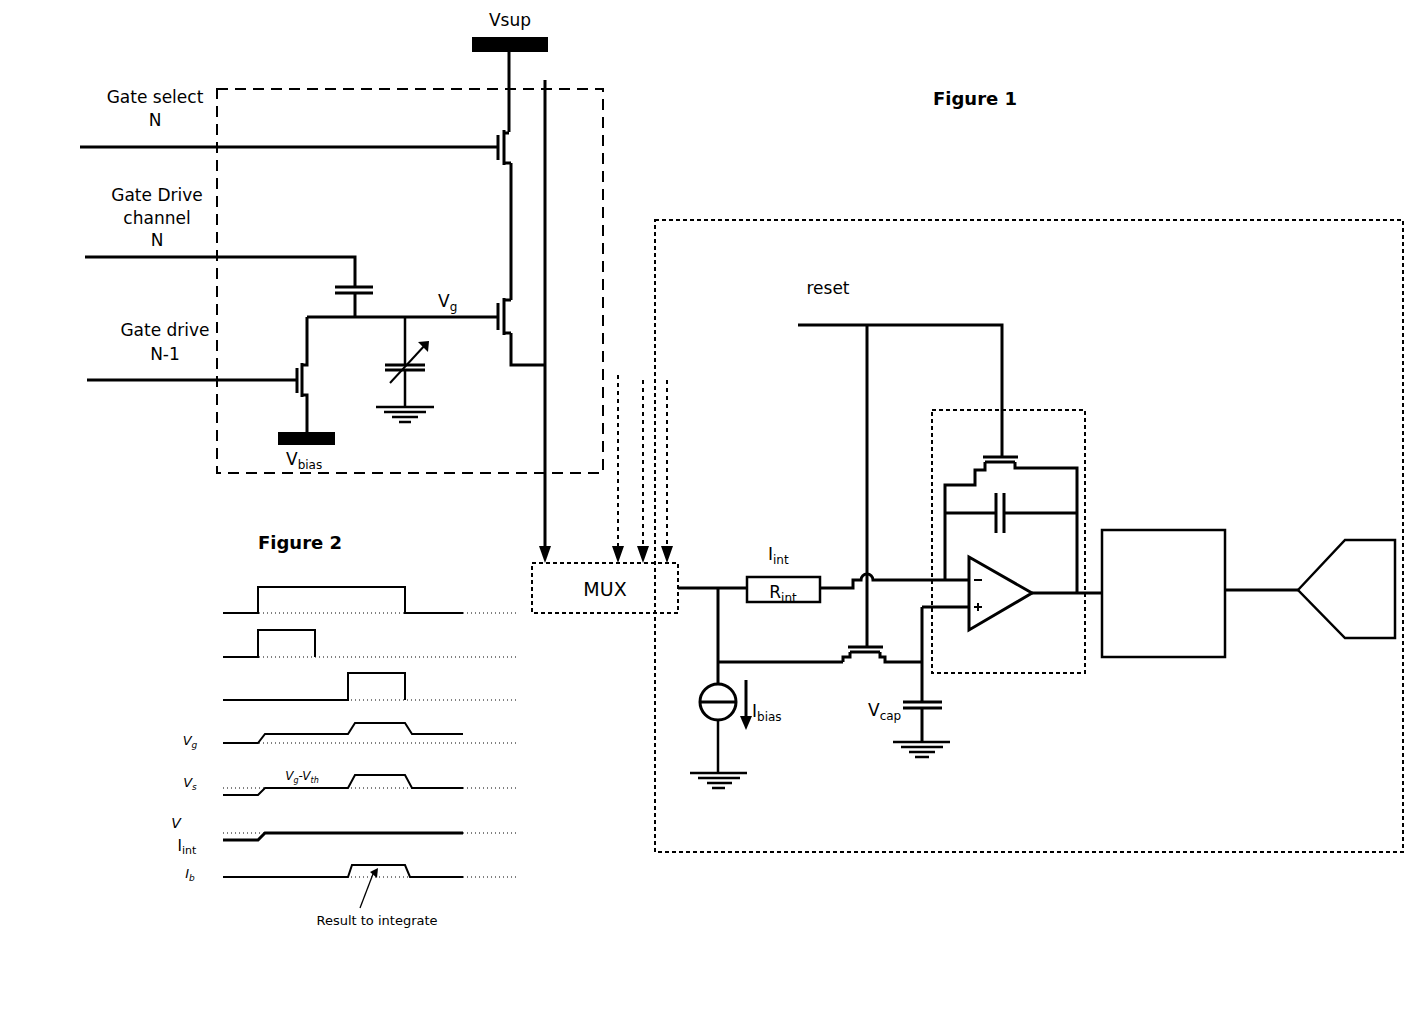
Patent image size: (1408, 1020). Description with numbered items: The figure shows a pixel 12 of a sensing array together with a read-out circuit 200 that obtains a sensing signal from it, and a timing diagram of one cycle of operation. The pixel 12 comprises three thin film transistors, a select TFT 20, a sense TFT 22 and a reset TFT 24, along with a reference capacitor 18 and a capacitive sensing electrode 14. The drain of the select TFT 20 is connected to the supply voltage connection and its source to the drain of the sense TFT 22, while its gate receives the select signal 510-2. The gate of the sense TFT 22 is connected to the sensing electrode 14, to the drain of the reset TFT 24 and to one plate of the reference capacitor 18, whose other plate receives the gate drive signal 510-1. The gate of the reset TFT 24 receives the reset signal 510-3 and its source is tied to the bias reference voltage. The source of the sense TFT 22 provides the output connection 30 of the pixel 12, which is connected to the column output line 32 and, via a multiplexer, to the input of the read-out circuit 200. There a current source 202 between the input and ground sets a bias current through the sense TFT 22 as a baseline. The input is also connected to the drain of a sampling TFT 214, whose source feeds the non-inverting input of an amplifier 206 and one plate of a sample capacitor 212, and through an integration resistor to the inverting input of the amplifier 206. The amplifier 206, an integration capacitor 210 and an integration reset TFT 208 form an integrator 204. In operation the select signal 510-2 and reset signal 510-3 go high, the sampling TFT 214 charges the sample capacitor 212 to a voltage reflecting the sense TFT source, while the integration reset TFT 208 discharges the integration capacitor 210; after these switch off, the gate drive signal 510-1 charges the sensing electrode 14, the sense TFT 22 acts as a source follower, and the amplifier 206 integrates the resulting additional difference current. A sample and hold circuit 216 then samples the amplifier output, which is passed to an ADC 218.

In FIG. 1, the pixel 12 is at (410, 268).
In FIG. 1, the capacitive sensing electrode 14 is at (402, 369).
In FIG. 1, the reference capacitor 18 is at (380, 290).
In FIG. 1, the select TFT 20 is at (495, 143).
In FIG. 1, the sense TFT 22 is at (498, 302).
In FIG. 1, the reset TFT 24 is at (295, 366).
In FIG. 1, the output connection 30 is at (536, 374).
In FIG. 1, the output line 32 is at (544, 496).
In FIG. 1, the read-out circuit 200 is at (1029, 524).
In FIG. 1, the current source 202 is at (700, 716).
In FIG. 1, the integrator 204 is at (1008, 531).
In FIG. 1, the amplifier 206 is at (1002, 620).
In FIG. 1, the integration reset TFT 208 is at (986, 456).
In FIG. 1, the integration capacitor 210 is at (1005, 531).
In FIG. 1, the sample capacitor 212 is at (925, 727).
In FIG. 1, the sampling TFT 214 is at (871, 666).
In FIG. 1, the sample and hold circuit 216 is at (1163, 593).
In FIG. 1, the ADC 218 is at (1346, 589).
In FIG. 1, the gate drive signal 510-1 is at (205, 257).
In FIG. 2, the gate drive signal 510-1 is at (311, 689).
In FIG. 1, the select signal 510-2 is at (274, 132).
In FIG. 2, the select signal 510-2 is at (325, 603).
In FIG. 1, the reset signal 510-3 is at (176, 359).
In FIG. 2, the reset signal 510-3 is at (311, 646).